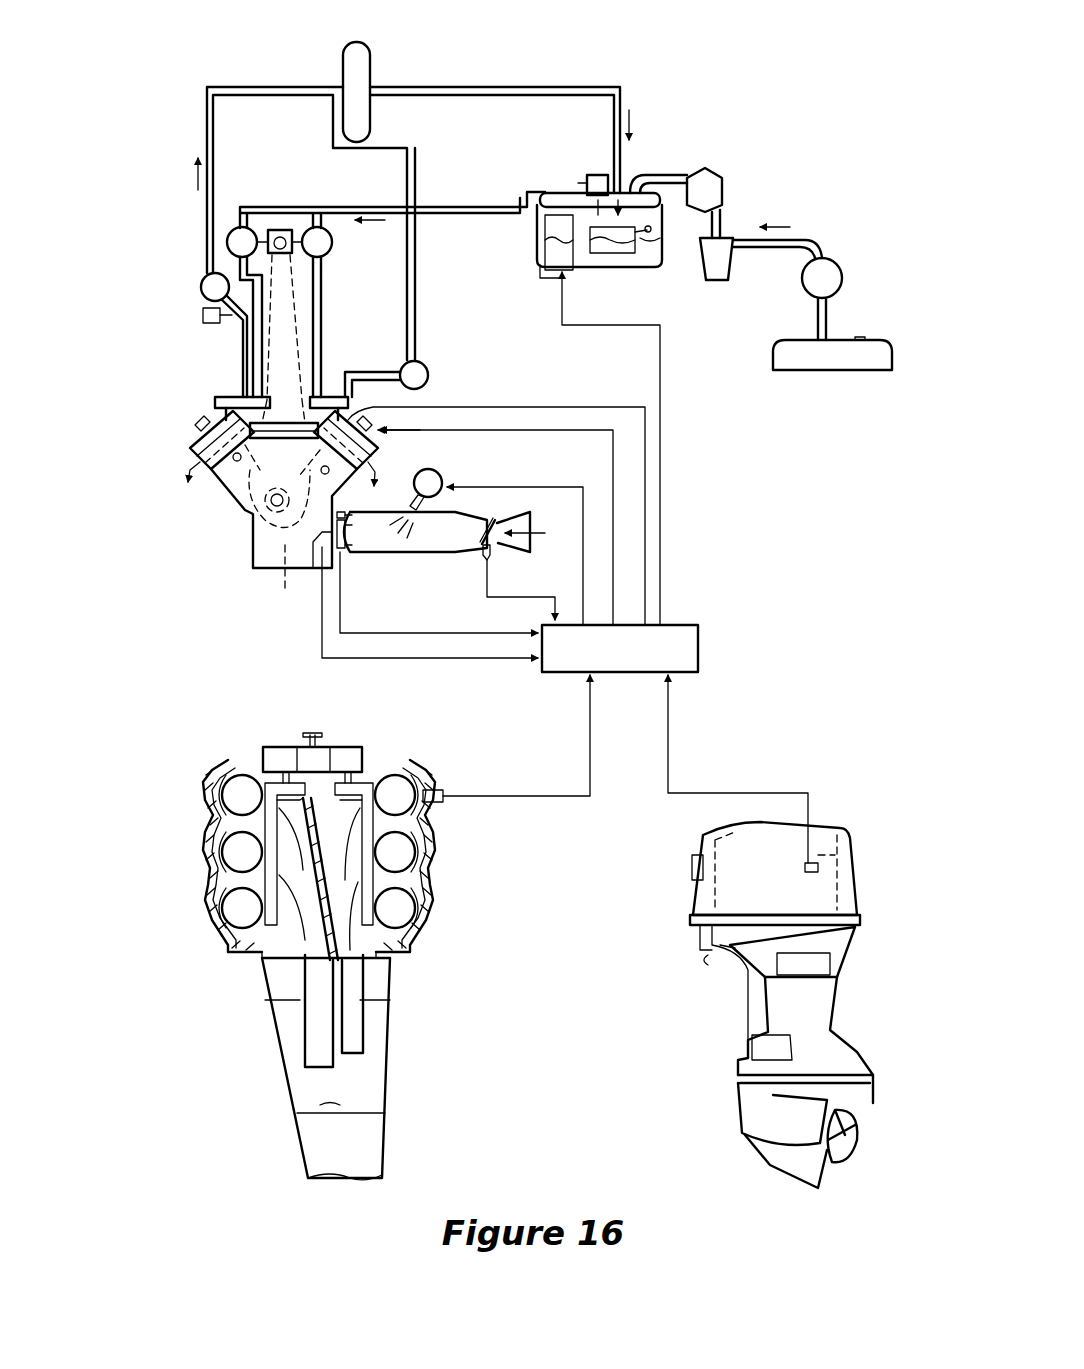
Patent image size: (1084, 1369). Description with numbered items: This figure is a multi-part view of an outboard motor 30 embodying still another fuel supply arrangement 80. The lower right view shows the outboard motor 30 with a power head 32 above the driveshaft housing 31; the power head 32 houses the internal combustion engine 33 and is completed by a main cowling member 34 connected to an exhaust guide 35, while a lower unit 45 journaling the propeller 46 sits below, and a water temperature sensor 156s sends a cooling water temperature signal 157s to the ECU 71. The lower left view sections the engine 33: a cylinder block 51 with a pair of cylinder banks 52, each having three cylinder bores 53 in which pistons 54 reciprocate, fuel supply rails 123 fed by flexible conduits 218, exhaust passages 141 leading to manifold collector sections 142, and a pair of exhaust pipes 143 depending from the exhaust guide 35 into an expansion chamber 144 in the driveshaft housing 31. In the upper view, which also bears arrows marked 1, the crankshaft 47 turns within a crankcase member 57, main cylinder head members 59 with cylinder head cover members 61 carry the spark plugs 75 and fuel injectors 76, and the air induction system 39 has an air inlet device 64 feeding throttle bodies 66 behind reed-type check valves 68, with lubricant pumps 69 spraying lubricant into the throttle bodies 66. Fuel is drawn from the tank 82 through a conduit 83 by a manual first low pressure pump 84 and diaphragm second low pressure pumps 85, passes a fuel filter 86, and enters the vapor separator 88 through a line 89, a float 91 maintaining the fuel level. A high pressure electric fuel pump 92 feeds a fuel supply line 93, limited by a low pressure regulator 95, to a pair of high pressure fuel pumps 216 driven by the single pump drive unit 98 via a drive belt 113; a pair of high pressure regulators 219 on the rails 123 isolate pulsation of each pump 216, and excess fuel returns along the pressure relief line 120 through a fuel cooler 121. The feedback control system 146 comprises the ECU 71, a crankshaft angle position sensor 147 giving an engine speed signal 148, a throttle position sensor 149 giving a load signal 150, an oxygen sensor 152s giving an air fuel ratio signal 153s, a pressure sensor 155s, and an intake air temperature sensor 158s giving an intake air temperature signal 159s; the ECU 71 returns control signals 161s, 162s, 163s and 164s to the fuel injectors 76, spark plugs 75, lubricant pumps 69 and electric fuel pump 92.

The section view arrow 1 is at (281, 485).
The outboard motor 30 is at (835, 805).
The driveshaft housing 31 is at (385, 1105).
The power head 32 is at (865, 910).
The internal combustion engine 33 is at (462, 873).
The main cowling member 34 is at (693, 895).
The exhaust guide 35 is at (390, 982).
The air induction system 39 is at (455, 522).
The lower unit 45 is at (740, 1115).
The propeller 46 is at (840, 1165).
The crankshaft 47 is at (288, 540).
The cylinder block 51 is at (215, 500).
The cylinder banks 52 is at (358, 507).
The cylinder bores 53 is at (225, 783).
The pistons 54 is at (225, 510).
The crankcase member 57 is at (262, 562).
The main cylinder head member 59 is at (190, 458).
The cylinder head cover member 61 is at (365, 428).
The air silencing and inlet device 64 is at (522, 526).
The throttle bodies 66 is at (430, 545).
The reed-type check valves 68 is at (345, 545).
The lubricant pumps 69 is at (440, 480).
The ECU 71 is at (700, 648).
The spark plug 75 is at (195, 425).
The fuel injector 76 is at (225, 420).
The fuel supply system 80 is at (618, 52).
The main fuel supply tank 82 is at (835, 370).
The conduit 83 is at (830, 325).
The first low pressure pump 84 is at (828, 258).
The second low pressure pumps 85 is at (722, 190).
The fuel filter 86 is at (733, 262).
The vapor separator 88 is at (648, 262).
The line 89 is at (665, 170).
The float 91 is at (610, 262).
The high pressure electric fuel pump 92 is at (565, 260).
The fuel supply line 93 is at (458, 207).
The low pressure regulator 95 is at (598, 175).
The pump drive unit 98 is at (283, 230).
The drive belt 113 is at (300, 332).
The pressure relief line 120 is at (510, 87).
The fuel heat exchanger or cooler 121 is at (370, 65).
The fuel supply rails 123 is at (223, 397).
The exhaust passage 141 is at (290, 817).
The manifold collector sections 142 is at (295, 960).
The exhaust pipes 143 is at (305, 1030).
The expansion chamber 144 is at (341, 1094).
The feedback control system 146 is at (740, 556).
The crankshaft angle position sensor 147 is at (308, 560).
The engine speed signal 148 is at (457, 660).
The throttle position sensor 149 is at (490, 558).
The throttle position or load signal 150 is at (502, 600).
The oxygen sensor 152s is at (443, 795).
The air fuel ratio signal 153s is at (567, 797).
The pressure sensor 155s is at (203, 315).
The water temperature sensor 156s is at (820, 865).
The cooling water temperature signal 157s is at (668, 738).
The intake air temperature sensor 158s is at (340, 560).
The intake air temperature signal 159s is at (395, 633).
The control signal to fuel injectors 161s is at (545, 405).
The control signal to spark plugs 162s is at (548, 430).
The control signal to lubrication pumps 163s is at (520, 487).
The control signal to high pressure electric fuel pump 164s is at (665, 452).
The high pressure fuel pumps 216 is at (240, 230).
The flexible conduits 218 is at (258, 305).
The high pressure regulators 219 is at (202, 283).